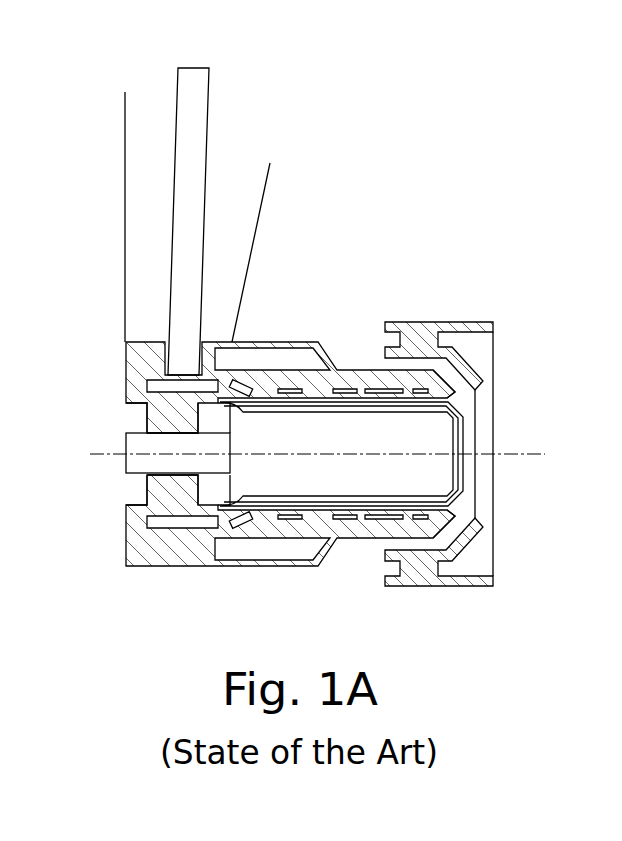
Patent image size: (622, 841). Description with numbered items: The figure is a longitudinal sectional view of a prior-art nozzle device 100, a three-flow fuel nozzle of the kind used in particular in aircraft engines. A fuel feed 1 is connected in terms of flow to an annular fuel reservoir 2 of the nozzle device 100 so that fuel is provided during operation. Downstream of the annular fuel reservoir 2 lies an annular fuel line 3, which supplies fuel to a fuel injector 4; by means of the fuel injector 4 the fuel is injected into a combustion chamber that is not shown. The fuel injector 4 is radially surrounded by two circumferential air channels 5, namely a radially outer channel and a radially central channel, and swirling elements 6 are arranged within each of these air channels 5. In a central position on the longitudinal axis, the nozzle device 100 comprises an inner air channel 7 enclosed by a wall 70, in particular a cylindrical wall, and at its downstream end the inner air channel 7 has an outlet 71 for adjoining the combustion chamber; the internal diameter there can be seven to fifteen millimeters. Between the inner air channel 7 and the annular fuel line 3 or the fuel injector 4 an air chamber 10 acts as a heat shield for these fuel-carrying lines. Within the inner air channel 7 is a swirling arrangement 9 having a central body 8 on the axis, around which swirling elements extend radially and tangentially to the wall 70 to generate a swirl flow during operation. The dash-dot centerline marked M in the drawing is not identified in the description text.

The fuel feed 1 is at (200, 106).
The annular fuel reservoir 2 is at (205, 382).
The annular fuel line 3 is at (375, 387).
The fuel injector 4 is at (457, 394).
The circumferential air channels 5 is at (458, 382).
The swirling elements 6 is at (437, 570).
The inner air channel 7 is at (140, 488).
The central body 8 is at (165, 450).
The swirling arrangement 9 is at (178, 498).
The air chamber 10 is at (333, 368).
The wall 70 is at (317, 408).
The outlet 71 is at (452, 429).
The nozzle device 100 is at (309, 408).
The center axis M is at (528, 457).